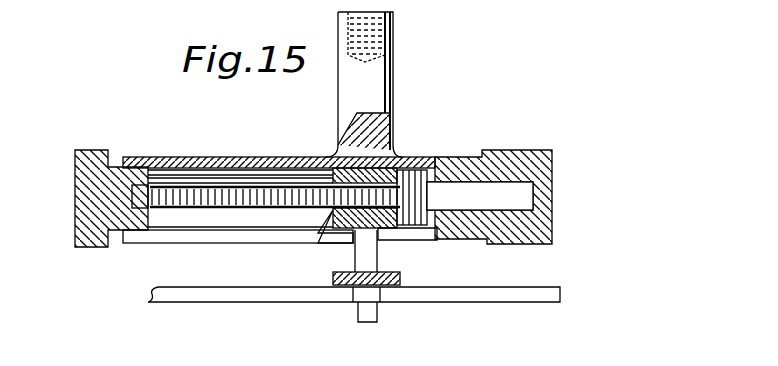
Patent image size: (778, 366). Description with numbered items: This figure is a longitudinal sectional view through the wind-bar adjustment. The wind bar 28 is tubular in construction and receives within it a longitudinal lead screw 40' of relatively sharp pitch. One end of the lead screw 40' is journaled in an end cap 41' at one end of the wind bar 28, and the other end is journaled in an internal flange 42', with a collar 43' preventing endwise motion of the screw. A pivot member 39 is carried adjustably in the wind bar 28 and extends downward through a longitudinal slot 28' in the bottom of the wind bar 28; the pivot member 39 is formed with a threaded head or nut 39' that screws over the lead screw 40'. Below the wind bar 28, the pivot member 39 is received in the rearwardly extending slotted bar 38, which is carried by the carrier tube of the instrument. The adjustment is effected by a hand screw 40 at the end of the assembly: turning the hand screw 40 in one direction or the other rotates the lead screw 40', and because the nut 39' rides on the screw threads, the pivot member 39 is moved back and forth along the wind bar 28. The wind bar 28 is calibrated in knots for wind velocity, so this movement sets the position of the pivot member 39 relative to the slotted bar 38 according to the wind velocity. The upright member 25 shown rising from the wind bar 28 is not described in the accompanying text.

The upright arm 25 is at (353, 97).
The wind bar 28 is at (279, 142).
The longitudinal slot 28' is at (238, 254).
The slotted bar 38 is at (257, 303).
The pivot member 39 is at (367, 275).
The threaded head or nut 39' is at (313, 236).
The hand screw 40 is at (489, 182).
The lead screw 40' is at (266, 172).
The end cap 41' is at (89, 198).
The internal flange 42' is at (429, 173).
The collar 43' is at (379, 174).